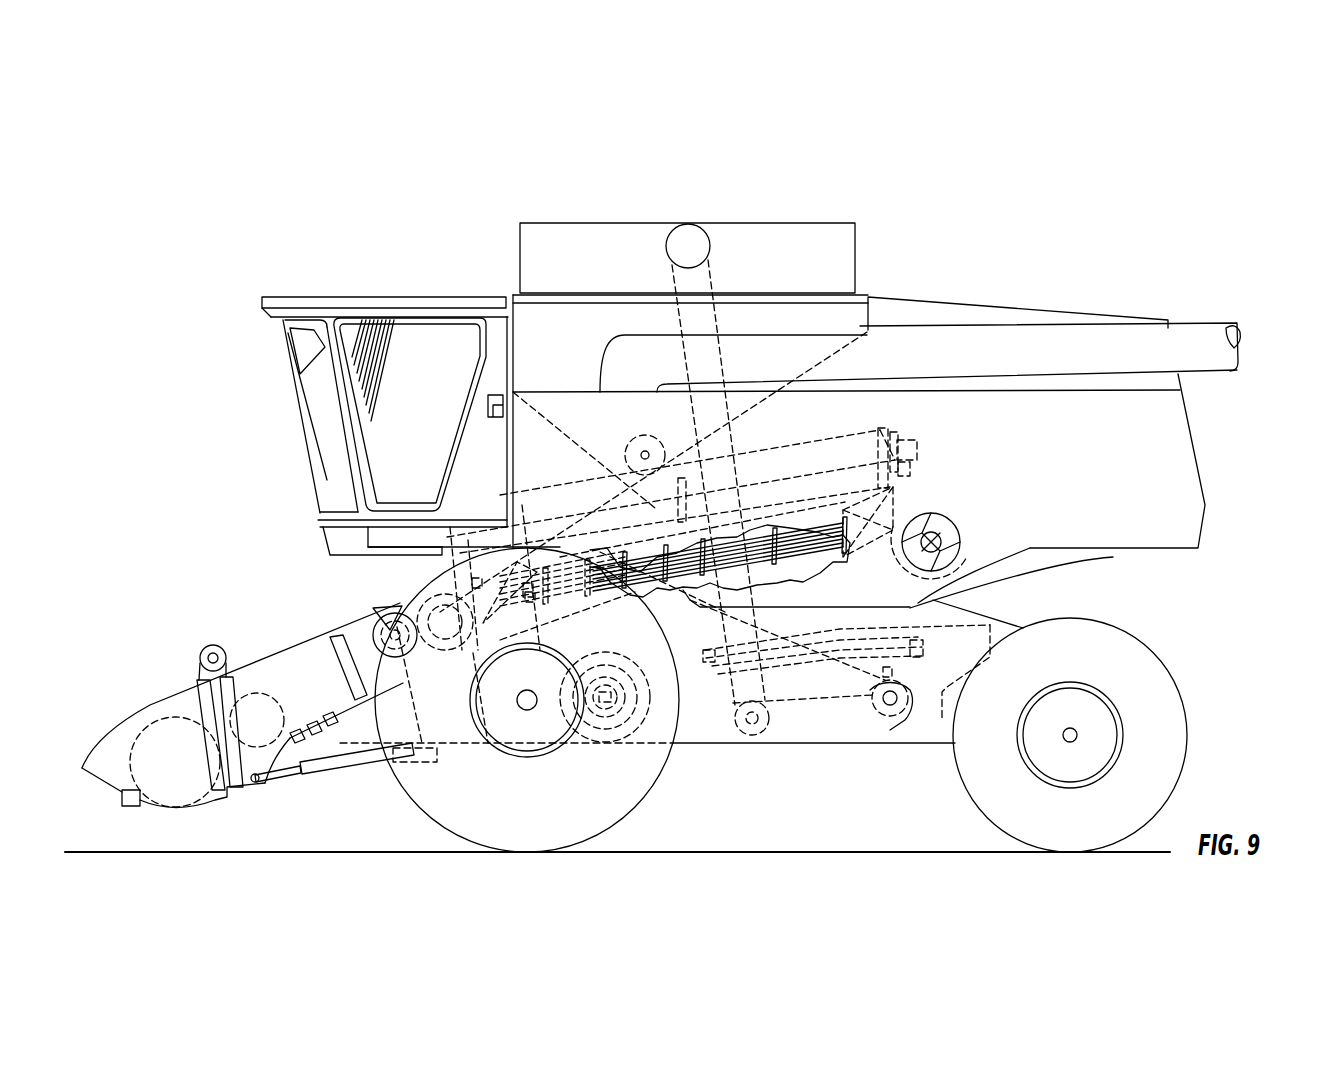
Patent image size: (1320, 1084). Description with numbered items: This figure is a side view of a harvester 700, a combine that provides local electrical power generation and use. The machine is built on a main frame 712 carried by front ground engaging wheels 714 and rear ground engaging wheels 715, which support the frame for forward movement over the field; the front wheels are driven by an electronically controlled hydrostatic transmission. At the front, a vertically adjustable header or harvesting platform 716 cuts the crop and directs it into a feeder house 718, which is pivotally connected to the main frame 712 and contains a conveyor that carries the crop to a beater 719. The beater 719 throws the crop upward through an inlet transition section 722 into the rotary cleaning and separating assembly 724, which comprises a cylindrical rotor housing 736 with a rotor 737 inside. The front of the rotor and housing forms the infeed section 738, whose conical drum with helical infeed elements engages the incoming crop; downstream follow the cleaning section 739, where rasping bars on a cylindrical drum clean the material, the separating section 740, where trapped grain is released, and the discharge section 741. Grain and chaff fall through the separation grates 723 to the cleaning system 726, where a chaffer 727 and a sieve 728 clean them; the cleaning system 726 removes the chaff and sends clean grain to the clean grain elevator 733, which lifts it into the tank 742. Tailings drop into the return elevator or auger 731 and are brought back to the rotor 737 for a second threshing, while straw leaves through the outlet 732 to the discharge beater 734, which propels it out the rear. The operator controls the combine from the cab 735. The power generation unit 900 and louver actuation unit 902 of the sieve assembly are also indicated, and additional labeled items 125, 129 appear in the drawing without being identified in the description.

The harvester 700 is at (1150, 205).
The operator's cab 735 is at (388, 298).
The tank 742 is at (870, 317).
The clean grain elevator 733 is at (732, 372).
The cylindrical rotor housing 736 is at (846, 425).
The discharge section 741 is at (892, 412).
The cleaning section 739 is at (610, 476).
The separating section 740 is at (767, 446).
The rotor 737 is at (866, 446).
The outlet 732 is at (920, 476).
The discharge beater 734 is at (973, 519).
The infeed section 738 is at (481, 504).
The rotary cleaning and separating assembly 724 is at (590, 502).
The inlet transition section 722 is at (411, 583).
The beater 719 is at (411, 584).
The front ground engaging wheels 714 is at (393, 620).
The feeder house 718 is at (308, 655).
The header or harvesting platform 716 is at (130, 686).
The drive pulley 125 is at (628, 612).
The rear wheel / drive hub 129 is at (593, 745).
The separation grates 723 is at (793, 570).
The cleaning system 726 is at (838, 632).
The chaffer 727 is at (935, 635).
The sieve 728 is at (915, 678).
The return elevator or auger 731 is at (892, 718).
The rear ground engaging wheels 715 is at (1190, 718).
The main frame 712 is at (990, 619).
The power generation unit 900 is at (1075, 555).
The louver actuation unit 902 is at (974, 575).